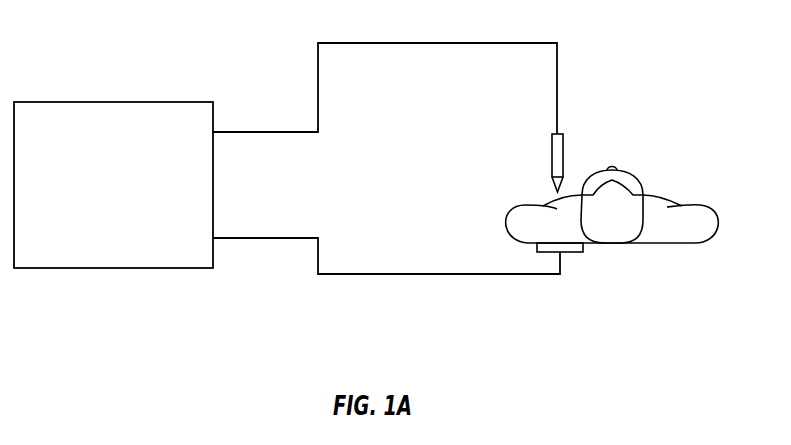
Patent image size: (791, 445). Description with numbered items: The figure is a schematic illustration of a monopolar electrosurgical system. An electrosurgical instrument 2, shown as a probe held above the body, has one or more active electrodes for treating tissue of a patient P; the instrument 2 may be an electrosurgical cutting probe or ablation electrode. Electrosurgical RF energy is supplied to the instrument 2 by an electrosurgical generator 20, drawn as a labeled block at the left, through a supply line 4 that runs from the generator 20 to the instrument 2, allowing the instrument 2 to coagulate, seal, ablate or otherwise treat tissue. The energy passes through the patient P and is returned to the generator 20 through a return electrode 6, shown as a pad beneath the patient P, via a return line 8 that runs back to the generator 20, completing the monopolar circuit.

The generator 20 is at (105, 101).
The supply line 4 is at (438, 43).
The return line 8 is at (452, 277).
The electrosurgical instrument 2 is at (551, 160).
The return electrode 6 is at (576, 253).
The patient P is at (683, 194).